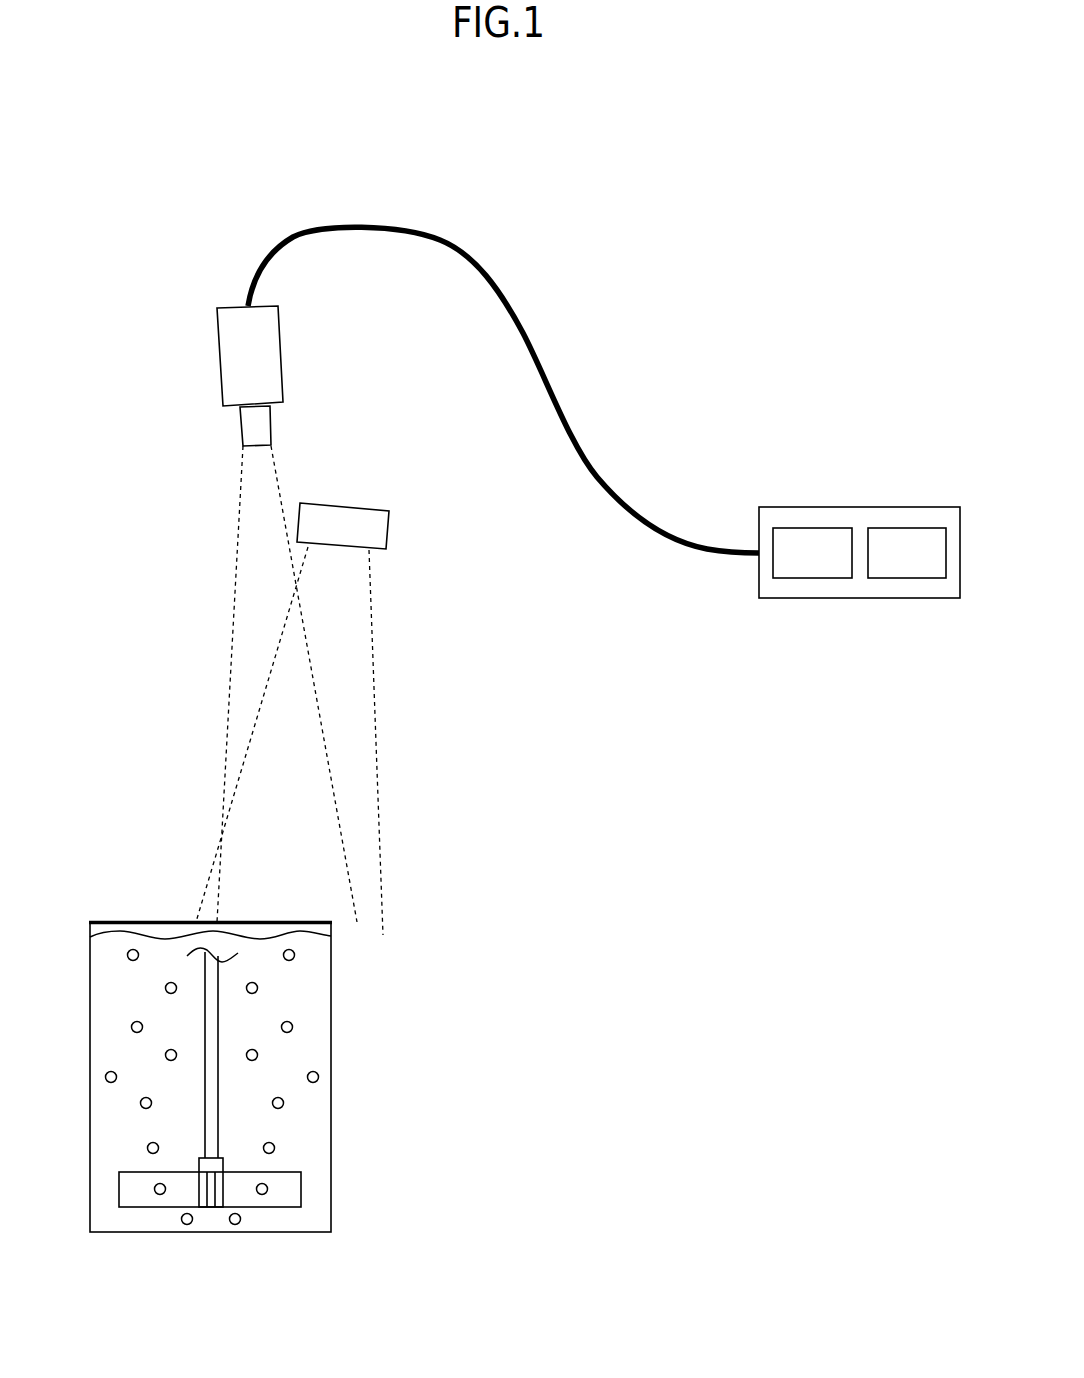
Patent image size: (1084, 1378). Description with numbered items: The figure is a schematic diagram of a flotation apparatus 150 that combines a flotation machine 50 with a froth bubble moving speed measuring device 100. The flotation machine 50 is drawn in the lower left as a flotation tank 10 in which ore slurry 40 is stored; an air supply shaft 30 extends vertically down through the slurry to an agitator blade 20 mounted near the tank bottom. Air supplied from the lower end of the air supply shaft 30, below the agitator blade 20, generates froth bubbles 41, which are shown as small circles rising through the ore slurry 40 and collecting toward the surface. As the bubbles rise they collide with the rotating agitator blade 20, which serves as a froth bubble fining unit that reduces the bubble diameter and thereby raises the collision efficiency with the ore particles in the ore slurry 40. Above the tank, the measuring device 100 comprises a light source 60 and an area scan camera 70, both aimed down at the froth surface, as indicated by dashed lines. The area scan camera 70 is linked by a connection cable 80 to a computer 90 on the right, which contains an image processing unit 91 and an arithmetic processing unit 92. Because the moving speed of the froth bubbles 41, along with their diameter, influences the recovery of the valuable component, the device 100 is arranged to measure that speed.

The flotation tank 10 is at (331, 1117).
The agitator blade 20 is at (287, 1189).
The air supply shaft 30 is at (212, 1078).
The ore slurry 40 is at (111, 1050).
The froth bubble 41 is at (131, 1025).
The flotation machine 50 is at (121, 906).
The light source 60 is at (348, 491).
The area scan camera 70 is at (222, 294).
The connection cable 80 is at (481, 263).
The computer 90 is at (864, 474).
The image processing unit 91 is at (812, 578).
The arithmetic processing unit 92 is at (907, 578).
The froth bubble moving speed measuring device 100 is at (905, 128).
The flotation apparatus 150 is at (359, 181).